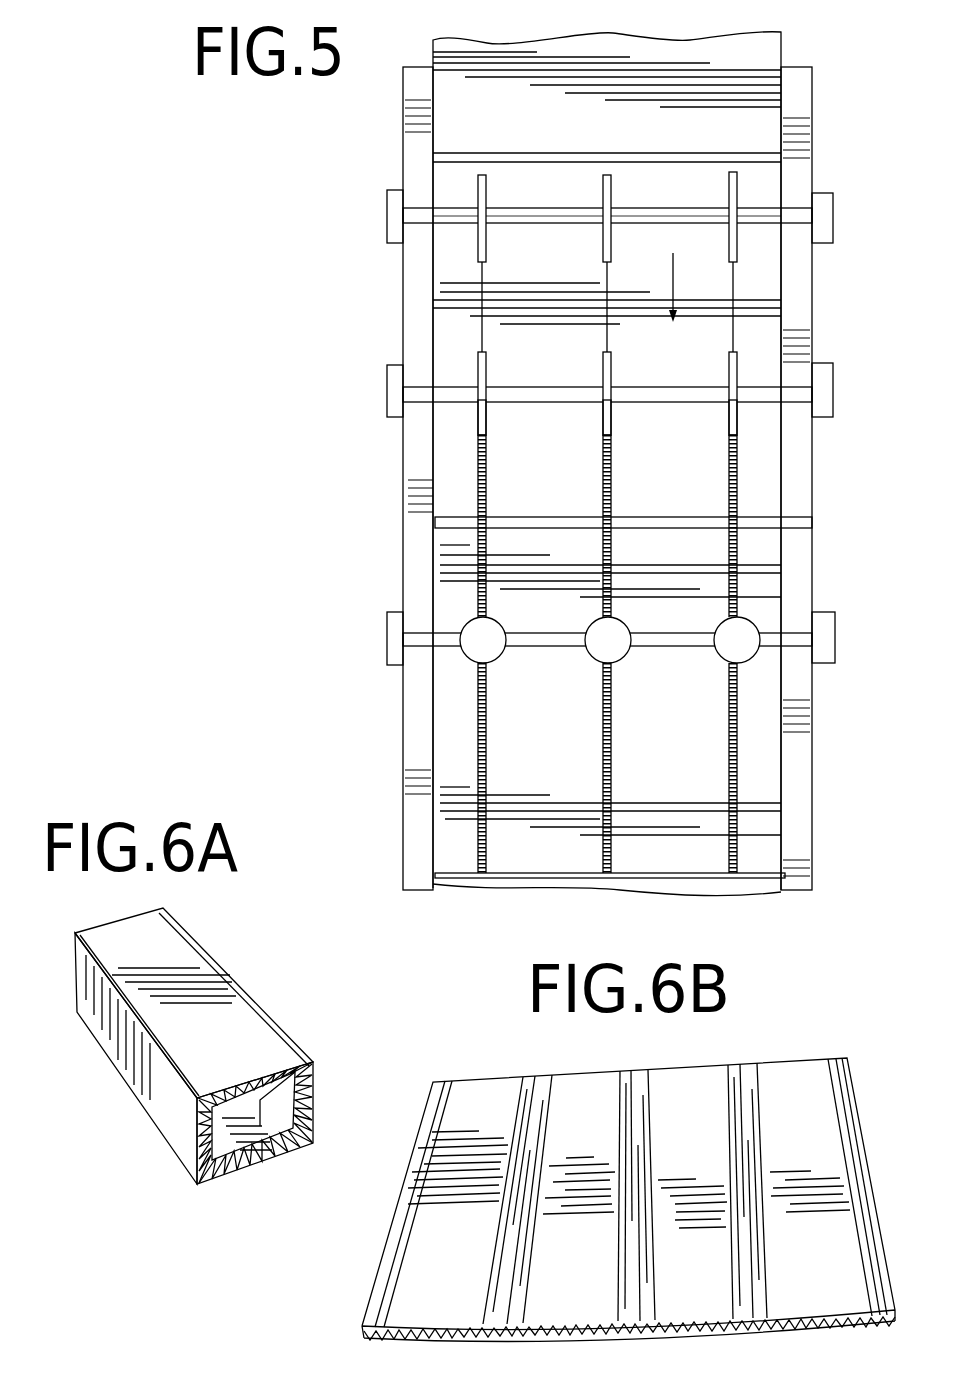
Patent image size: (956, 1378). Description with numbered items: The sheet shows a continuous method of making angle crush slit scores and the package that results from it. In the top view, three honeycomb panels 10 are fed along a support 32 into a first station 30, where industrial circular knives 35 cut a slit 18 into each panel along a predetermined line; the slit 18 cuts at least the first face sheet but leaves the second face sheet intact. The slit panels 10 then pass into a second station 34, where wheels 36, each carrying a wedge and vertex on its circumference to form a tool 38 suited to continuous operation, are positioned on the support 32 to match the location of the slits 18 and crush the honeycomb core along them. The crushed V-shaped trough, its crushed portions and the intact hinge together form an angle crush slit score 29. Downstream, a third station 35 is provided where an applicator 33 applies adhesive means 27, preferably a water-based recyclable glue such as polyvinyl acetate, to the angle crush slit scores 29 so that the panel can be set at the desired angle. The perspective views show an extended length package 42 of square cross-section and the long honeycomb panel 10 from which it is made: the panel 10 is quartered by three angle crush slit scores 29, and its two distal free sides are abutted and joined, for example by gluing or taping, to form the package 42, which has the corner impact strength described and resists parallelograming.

In FIG. 5, the honeycomb panel 10 is at (748, 60).
In FIG. 6B, the honeycomb panel 10 is at (810, 1046).
In FIG. 5, the slit 18 is at (484, 272).
In FIG. 5, the adhesive means 27 is at (487, 727).
In FIG. 5, the angle crush slit score 29 is at (487, 495).
In FIG. 6A, the angle crush slit score 29 is at (313, 1062).
In FIG. 6B, the angle crush slit score 29 is at (538, 1080).
In FIG. 5, the first station 30 is at (767, 213).
In FIG. 5, the support 32 is at (826, 334).
In FIG. 5, the applicator 33 is at (505, 622).
In FIG. 5, the second station 34 is at (800, 397).
In FIG. 5, the circular knives 35 is at (486, 187).
In FIG. 5, the wheel 36 is at (486, 353).
In FIG. 5, the tool 38 is at (487, 425).
In FIG. 6A, the extended length package 42 is at (268, 988).